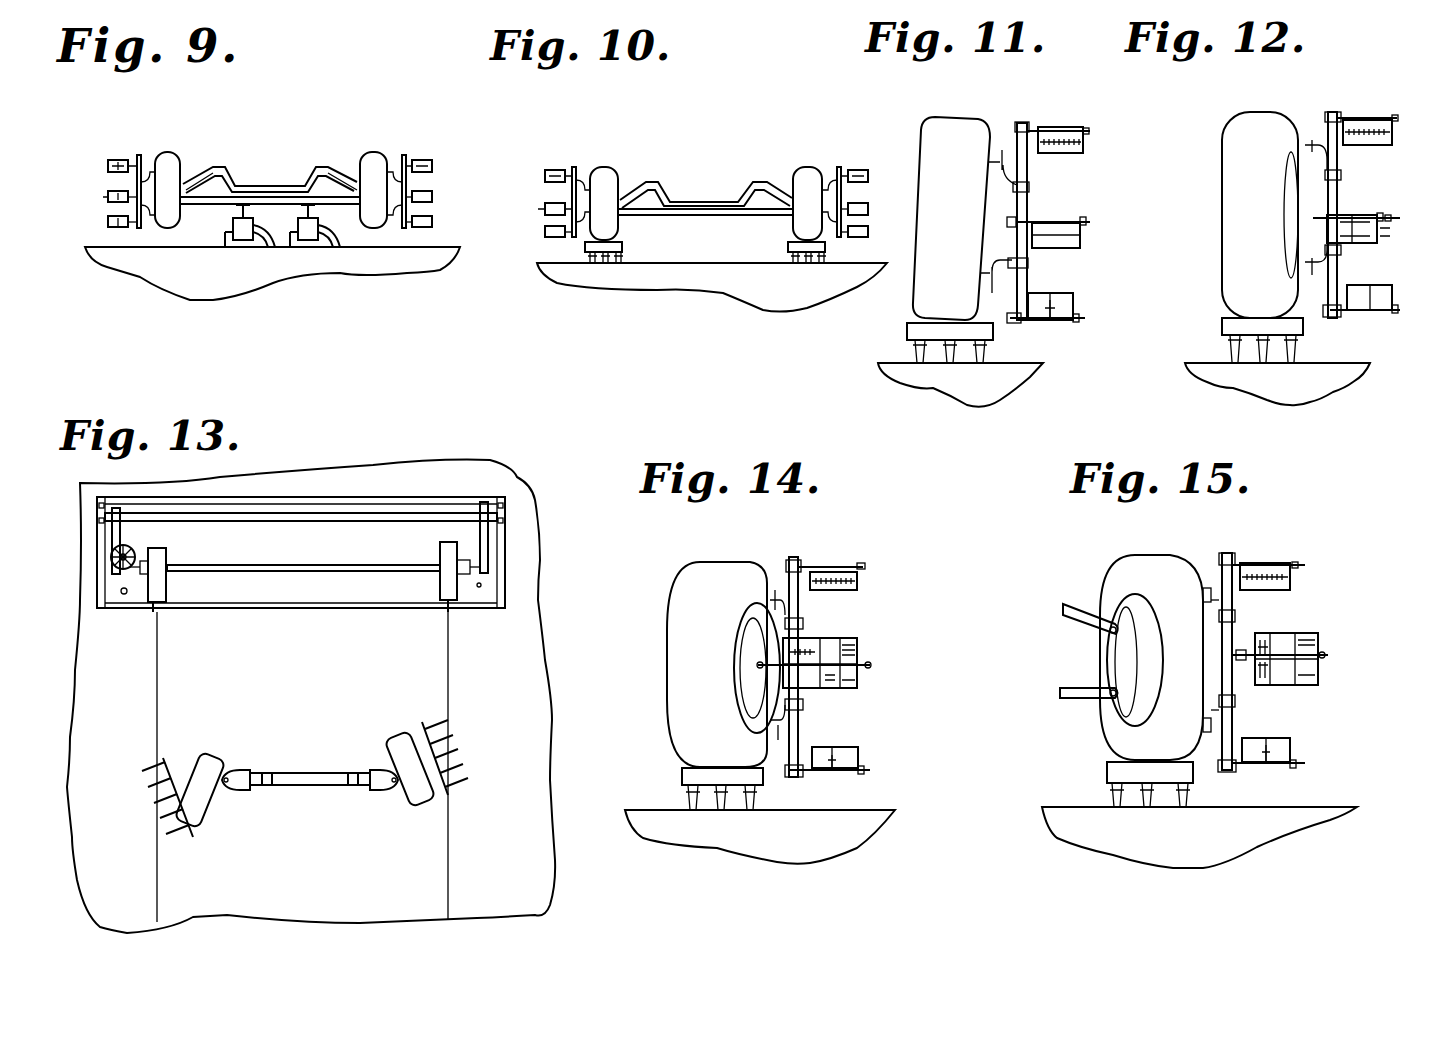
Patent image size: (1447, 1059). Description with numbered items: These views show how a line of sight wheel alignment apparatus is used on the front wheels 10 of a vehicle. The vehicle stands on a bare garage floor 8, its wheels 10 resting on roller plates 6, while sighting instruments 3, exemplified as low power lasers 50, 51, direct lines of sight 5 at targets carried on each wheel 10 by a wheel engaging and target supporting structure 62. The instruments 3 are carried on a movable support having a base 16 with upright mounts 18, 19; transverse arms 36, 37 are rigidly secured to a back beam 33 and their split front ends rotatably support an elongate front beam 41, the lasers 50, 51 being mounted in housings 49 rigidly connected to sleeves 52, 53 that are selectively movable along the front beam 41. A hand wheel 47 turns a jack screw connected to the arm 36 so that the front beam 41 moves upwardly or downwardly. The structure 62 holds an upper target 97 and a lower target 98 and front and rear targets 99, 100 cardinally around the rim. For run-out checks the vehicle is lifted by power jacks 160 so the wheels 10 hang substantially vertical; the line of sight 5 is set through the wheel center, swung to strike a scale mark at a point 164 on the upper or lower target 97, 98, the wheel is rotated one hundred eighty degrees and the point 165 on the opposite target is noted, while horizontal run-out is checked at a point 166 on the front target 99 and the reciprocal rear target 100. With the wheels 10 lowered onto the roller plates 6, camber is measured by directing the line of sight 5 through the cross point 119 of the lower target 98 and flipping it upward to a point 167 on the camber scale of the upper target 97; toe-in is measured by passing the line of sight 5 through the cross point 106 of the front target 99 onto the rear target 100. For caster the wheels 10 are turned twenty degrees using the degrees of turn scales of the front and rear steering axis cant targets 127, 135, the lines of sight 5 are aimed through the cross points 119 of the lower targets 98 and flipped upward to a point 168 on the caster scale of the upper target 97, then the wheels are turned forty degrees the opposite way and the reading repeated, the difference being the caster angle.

In FIG. 13, the sighting instruments 3 is at (440, 580).
In FIG. 13, the lines of sight 5 is at (450, 650).
In FIG. 10, the roller plates 6 is at (622, 248).
In FIG. 11, the roller plates 6 is at (993, 338).
In FIG. 12, the roller plates 6 is at (1303, 330).
In FIG. 14, the roller plates 6 is at (682, 778).
In FIG. 15, the roller plates 6 is at (1110, 770).
In FIG. 9, the garage floor 8 is at (188, 247).
In FIG. 10, the garage floor 8 is at (722, 263).
In FIG. 11, the garage floor 8 is at (880, 363).
In FIG. 12, the garage floor 8 is at (1205, 362).
In FIG. 13, the garage floor 8 is at (455, 470).
In FIG. 14, the garage floor 8 is at (655, 810).
In FIG. 15, the garage floor 8 is at (1072, 807).
In FIG. 9, the wheels 10 is at (178, 165).
In FIG. 10, the wheels 10 is at (801, 170).
In FIG. 11, the wheels 10 is at (945, 130).
In FIG. 12, the wheels 10 is at (1250, 125).
In FIG. 13, the wheels 10 is at (304, 779).
In FIG. 14, the wheels 10 is at (670, 713).
In FIG. 15, the wheels 10 is at (1118, 572).
In FIG. 13, the base 16 is at (392, 497).
In FIG. 13, the upright mount 18 is at (97, 587).
In FIG. 13, the upright mount 19 is at (505, 557).
In FIG. 13, the back beam 33 is at (315, 512).
In FIG. 13, the transverse arm 36 is at (112, 537).
In FIG. 13, the transverse arm 37 is at (480, 540).
In FIG. 13, the front beam 41 is at (235, 572).
In FIG. 13, the hand wheel 47 is at (133, 552).
In FIG. 13, the housings 49 is at (167, 585).
In FIG. 13, the laser 50 is at (153, 612).
In FIG. 13, the laser 51 is at (448, 610).
In FIG. 13, the sleeve 52 is at (170, 563).
In FIG. 13, the sleeve 53 is at (440, 560).
In FIG. 9, the wheel engaging and target supporting structure 62 is at (142, 160).
In FIG. 10, the wheel engaging and target supporting structure 62 is at (577, 175).
In FIG. 11, the wheel engaging and target supporting structure 62 is at (1020, 150).
In FIG. 12, the wheel engaging and target supporting structure 62 is at (1332, 140).
In FIG. 13, the wheel engaging and target supporting structure 62 is at (173, 757).
In FIG. 14, the wheel engaging and target supporting structure 62 is at (790, 565).
In FIG. 15, the wheel engaging and target supporting structure 62 is at (1222, 575).
In FIG. 9, the upper target 97 is at (108, 165).
In FIG. 10, the upper target 97 is at (545, 176).
In FIG. 11, the upper target 97 is at (1080, 122).
In FIG. 12, the upper target 97 is at (1395, 135).
In FIG. 13, the upper target 97 is at (152, 805).
In FIG. 14, the upper target 97 is at (851, 553).
In FIG. 15, the upper target 97 is at (1296, 557).
In FIG. 9, the lower target 98 is at (108, 222).
In FIG. 10, the lower target 98 is at (545, 232).
In FIG. 11, the lower target 98 is at (1071, 304).
In FIG. 12, the lower target 98 is at (1395, 305).
In FIG. 14, the lower target 98 is at (855, 777).
In FIG. 15, the lower target 98 is at (1293, 764).
In FIG. 9, the front target 99 is at (108, 197).
In FIG. 10, the front target 99 is at (545, 209).
In FIG. 11, the front target 99 is at (1085, 246).
In FIG. 12, the front target 99 is at (1368, 234).
In FIG. 13, the front target 99 is at (148, 760).
In FIG. 14, the front target 99 is at (845, 671).
In FIG. 15, the front target 99 is at (1306, 663).
In FIG. 12, the rear target 100 is at (1382, 238).
In FIG. 13, the rear target 100 is at (168, 838).
In FIG. 14, the rear target 100 is at (852, 690).
In FIG. 15, the rear target 100 is at (1262, 688).
In FIG. 12, the cross point 106 is at (1350, 228).
In FIG. 11, the cross point 119 is at (1052, 305).
In FIG. 14, the cross point 119 is at (835, 760).
In FIG. 15, the cross point 119 is at (1263, 765).
In FIG. 13, the front steering axis cant target 127 is at (150, 785).
In FIG. 14, the front steering axis cant target 127 is at (825, 640).
In FIG. 15, the front steering axis cant target 127 is at (1315, 638).
In FIG. 13, the rear steering axis cant target 135 is at (158, 822).
In FIG. 14, the rear steering axis cant target 135 is at (855, 652).
In FIG. 15, the rear steering axis cant target 135 is at (1262, 642).
In FIG. 9, the power jacks 160 is at (306, 222).
In FIG. 9, the point of impingement 164 is at (118, 163).
In FIG. 9, the point of impingement 165 is at (115, 226).
In FIG. 9, the point of impingement 166 is at (112, 196).
In FIG. 11, the point of impingement 167 is at (1062, 140).
In FIG. 14, the point of impingement 168 is at (838, 572).
In FIG. 15, the point of impingement 168 is at (1260, 575).